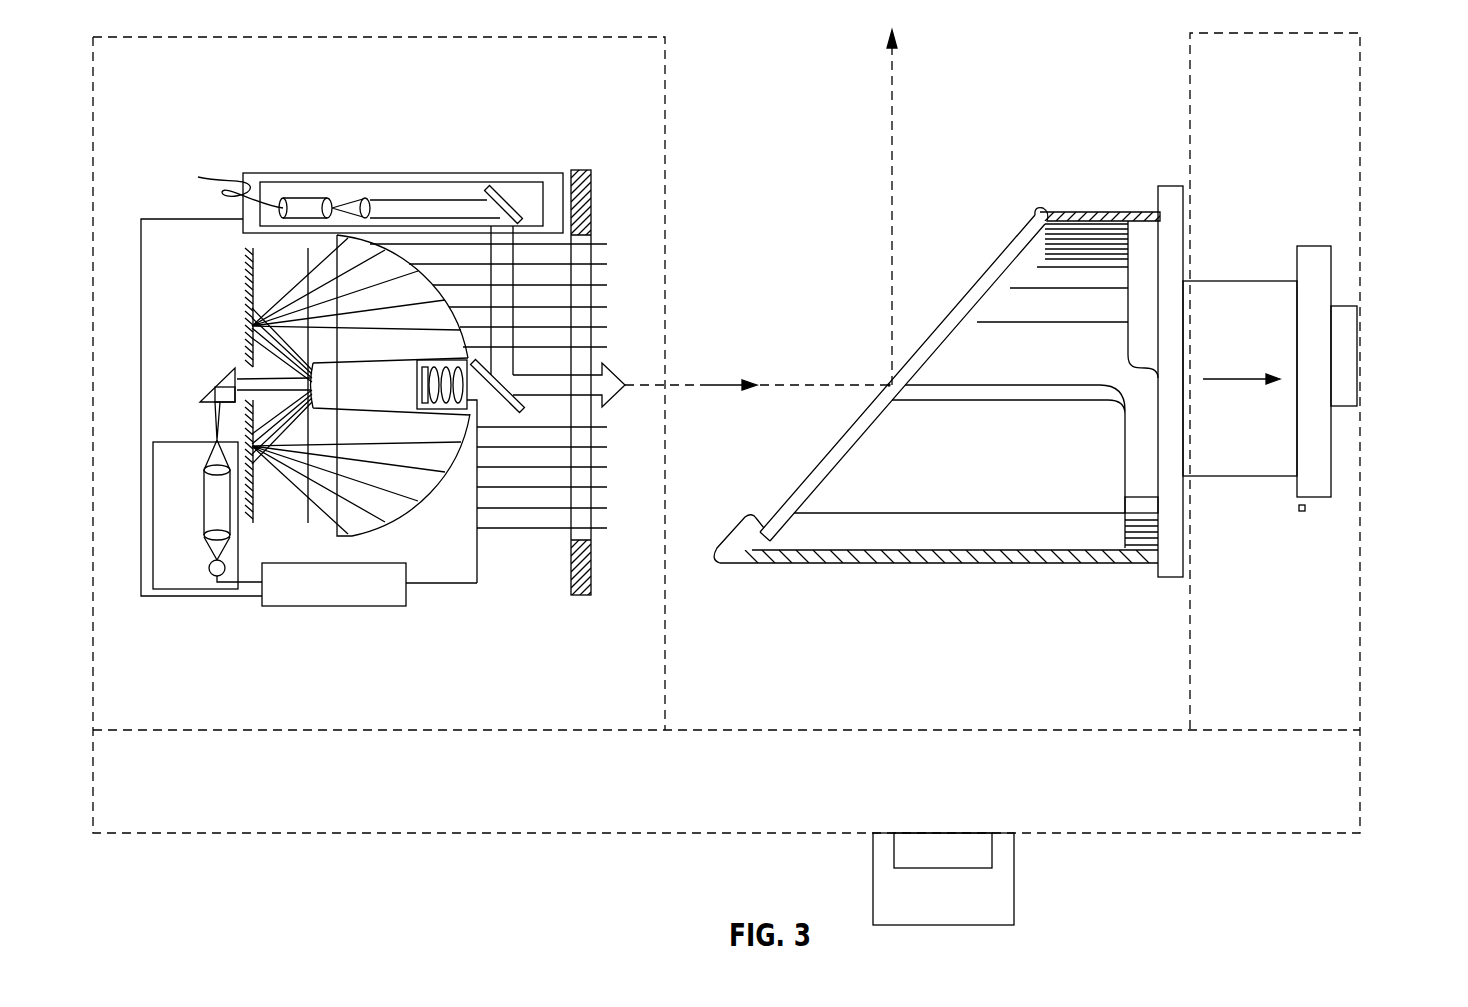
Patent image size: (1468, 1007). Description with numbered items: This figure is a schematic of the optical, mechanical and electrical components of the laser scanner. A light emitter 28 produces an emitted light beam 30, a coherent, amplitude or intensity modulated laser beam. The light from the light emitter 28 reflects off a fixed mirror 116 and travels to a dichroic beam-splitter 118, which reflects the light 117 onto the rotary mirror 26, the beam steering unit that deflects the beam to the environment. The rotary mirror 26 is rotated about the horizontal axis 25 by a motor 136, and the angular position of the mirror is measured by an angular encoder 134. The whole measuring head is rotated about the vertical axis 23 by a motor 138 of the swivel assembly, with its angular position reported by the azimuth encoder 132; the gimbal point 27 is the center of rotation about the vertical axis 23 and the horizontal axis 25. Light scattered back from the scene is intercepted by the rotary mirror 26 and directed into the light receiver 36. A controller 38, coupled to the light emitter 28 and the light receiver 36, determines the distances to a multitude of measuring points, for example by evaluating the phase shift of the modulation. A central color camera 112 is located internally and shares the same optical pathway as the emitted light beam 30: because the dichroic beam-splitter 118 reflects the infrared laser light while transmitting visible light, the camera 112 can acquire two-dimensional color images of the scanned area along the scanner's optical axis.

The vertical axis 23 is at (899, 82).
The horizontal axis 25 is at (1233, 379).
The rotary mirror 26 is at (1018, 275).
The gimbal point 27 is at (885, 386).
The light emitter 28 is at (310, 204).
The emitted light beam 30 is at (722, 385).
The light receiver 36 is at (188, 524).
The controller 38 is at (338, 607).
The central color camera 112 is at (445, 409).
The fixed mirror 116 is at (508, 201).
The light 117 is at (500, 298).
The dichroic beam-splitter 118 is at (498, 397).
The azimuth encoder 132 is at (995, 848).
The angular encoder 134 is at (1357, 348).
The motor 136 is at (1315, 497).
The motor 138 is at (1014, 893).